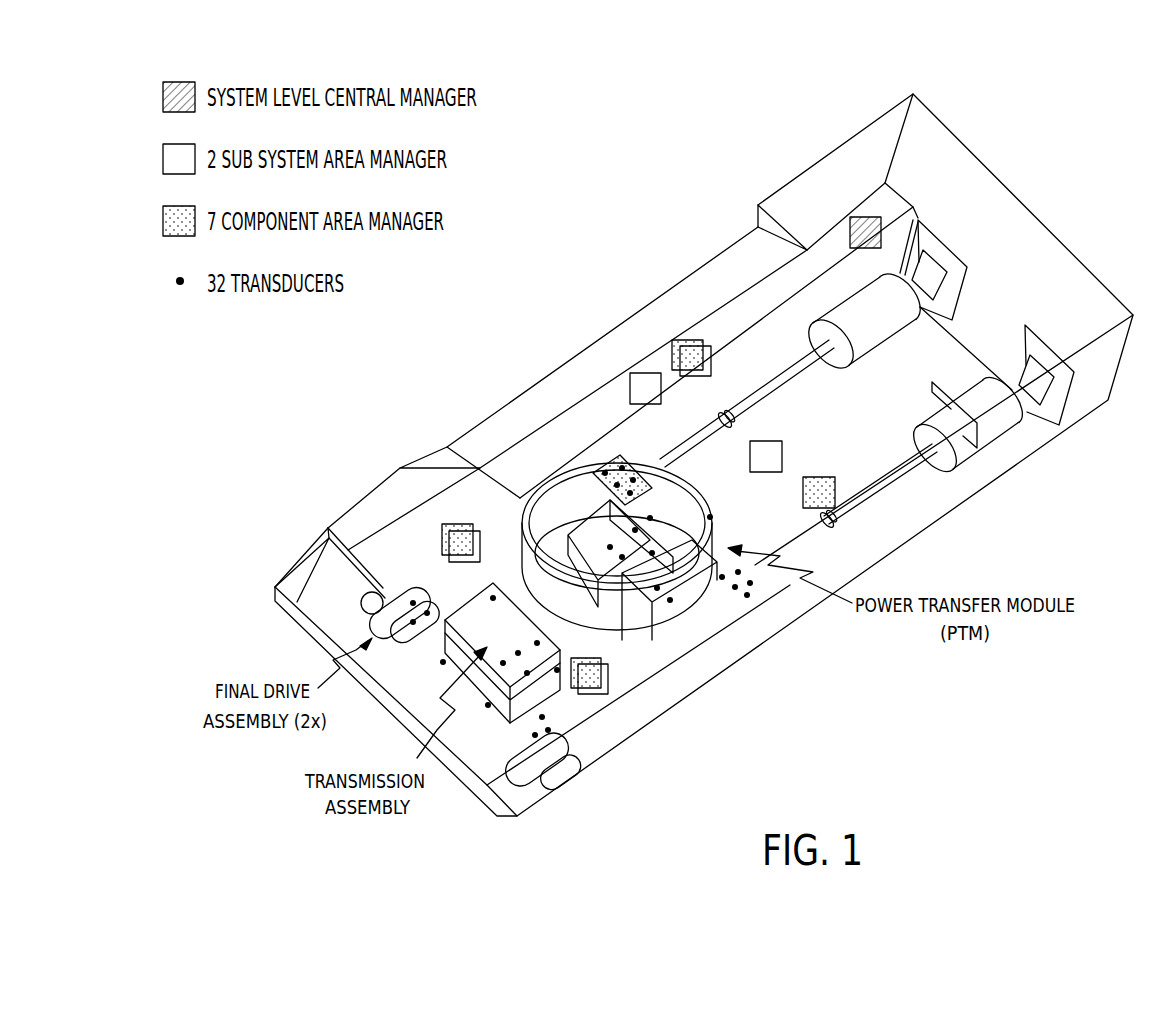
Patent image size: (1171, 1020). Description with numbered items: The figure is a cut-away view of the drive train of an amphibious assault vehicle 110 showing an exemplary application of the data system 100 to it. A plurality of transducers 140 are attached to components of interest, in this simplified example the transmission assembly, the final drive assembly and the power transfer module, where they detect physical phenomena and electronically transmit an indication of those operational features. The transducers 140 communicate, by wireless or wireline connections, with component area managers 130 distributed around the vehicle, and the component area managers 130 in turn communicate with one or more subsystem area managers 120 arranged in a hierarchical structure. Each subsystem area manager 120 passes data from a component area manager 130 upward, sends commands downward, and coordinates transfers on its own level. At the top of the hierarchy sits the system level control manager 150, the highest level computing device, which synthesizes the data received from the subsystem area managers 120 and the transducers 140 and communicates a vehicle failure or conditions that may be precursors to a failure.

The data system 100 is at (697, 190).
The amphibious assault vehicle 110 is at (1090, 262).
The subsystem area manager 120 is at (640, 373).
The component area manager 130 is at (685, 340).
The transducer 140 is at (563, 720).
The system level control manager 150 is at (881, 224).